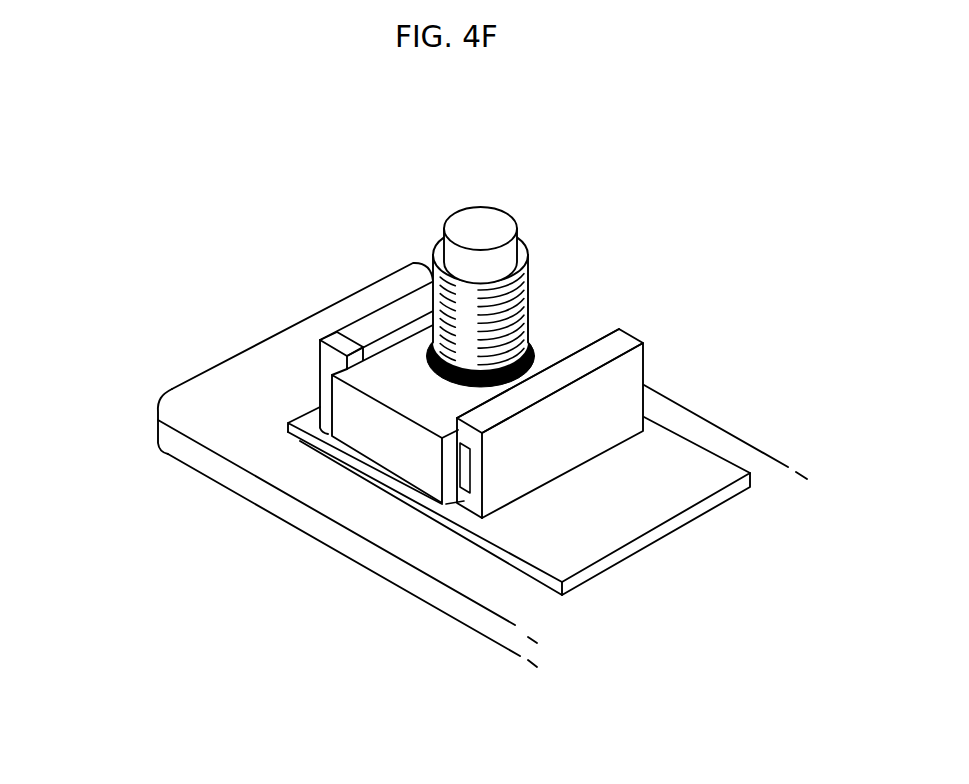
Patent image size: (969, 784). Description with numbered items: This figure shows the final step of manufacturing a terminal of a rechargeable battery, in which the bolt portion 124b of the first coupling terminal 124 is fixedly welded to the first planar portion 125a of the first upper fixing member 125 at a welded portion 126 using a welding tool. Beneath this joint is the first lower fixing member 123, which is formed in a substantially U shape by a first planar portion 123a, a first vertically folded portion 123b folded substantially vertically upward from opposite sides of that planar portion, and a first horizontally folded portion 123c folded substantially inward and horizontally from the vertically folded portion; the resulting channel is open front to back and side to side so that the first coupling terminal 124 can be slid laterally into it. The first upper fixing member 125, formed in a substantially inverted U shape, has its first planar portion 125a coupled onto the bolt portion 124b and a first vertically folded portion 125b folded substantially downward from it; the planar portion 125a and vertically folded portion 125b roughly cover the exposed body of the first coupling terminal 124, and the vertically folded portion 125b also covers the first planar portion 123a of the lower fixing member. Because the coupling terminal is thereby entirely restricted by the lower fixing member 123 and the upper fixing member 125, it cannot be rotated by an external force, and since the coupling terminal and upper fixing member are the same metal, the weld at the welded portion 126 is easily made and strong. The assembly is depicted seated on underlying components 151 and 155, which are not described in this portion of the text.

The base plate 151 is at (515, 598).
The mounting plate 155 is at (675, 468).
The first upper fixing member 125 is at (138, 244).
The first planar portion 125a is at (370, 380).
The first vertically folded portion 125b is at (343, 405).
The first lower fixing member 123 is at (533, 457).
The first planar portion 123a is at (460, 502).
The first vertically folded portion 123b is at (628, 375).
The first horizontally folded portion 123c is at (614, 345).
The first coupling terminal 124 is at (633, 338).
The bolt portion 124b is at (523, 240).
The welded portion 126 is at (528, 343).